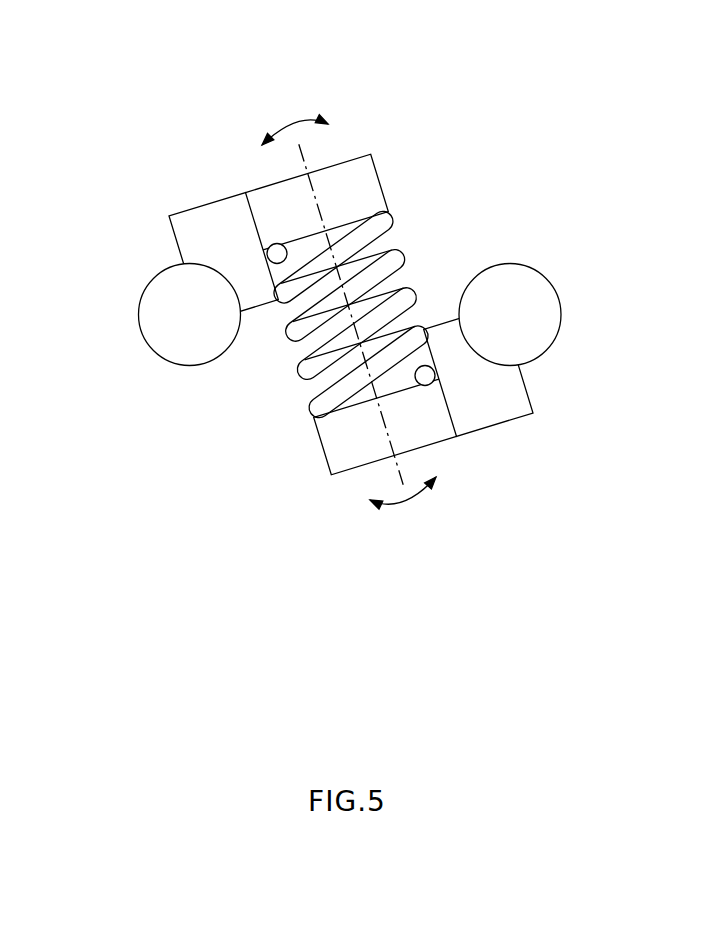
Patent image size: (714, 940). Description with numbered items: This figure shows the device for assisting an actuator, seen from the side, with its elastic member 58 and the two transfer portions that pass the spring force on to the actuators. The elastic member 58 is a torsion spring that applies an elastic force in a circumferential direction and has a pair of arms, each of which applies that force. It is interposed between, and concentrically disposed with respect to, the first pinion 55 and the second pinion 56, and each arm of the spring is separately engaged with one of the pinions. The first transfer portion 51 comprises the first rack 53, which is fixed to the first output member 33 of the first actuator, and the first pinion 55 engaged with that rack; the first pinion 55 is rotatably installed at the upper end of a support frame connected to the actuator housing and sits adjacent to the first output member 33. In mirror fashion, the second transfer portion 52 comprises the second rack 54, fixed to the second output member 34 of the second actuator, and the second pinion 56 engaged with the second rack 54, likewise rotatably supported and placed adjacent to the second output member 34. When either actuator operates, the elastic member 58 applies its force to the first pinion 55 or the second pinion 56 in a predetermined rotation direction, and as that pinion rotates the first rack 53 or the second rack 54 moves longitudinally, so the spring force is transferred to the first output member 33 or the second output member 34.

The first output member 33 is at (545, 313).
The second output member 34 is at (140, 317).
The first transfer portion 51 is at (424, 464).
The second transfer portion 52 is at (278, 162).
The first rack 53 is at (492, 420).
The second rack 54 is at (218, 216).
The first pinion 55 is at (385, 469).
The second pinion 56 is at (317, 156).
The elastic member 58 is at (397, 259).